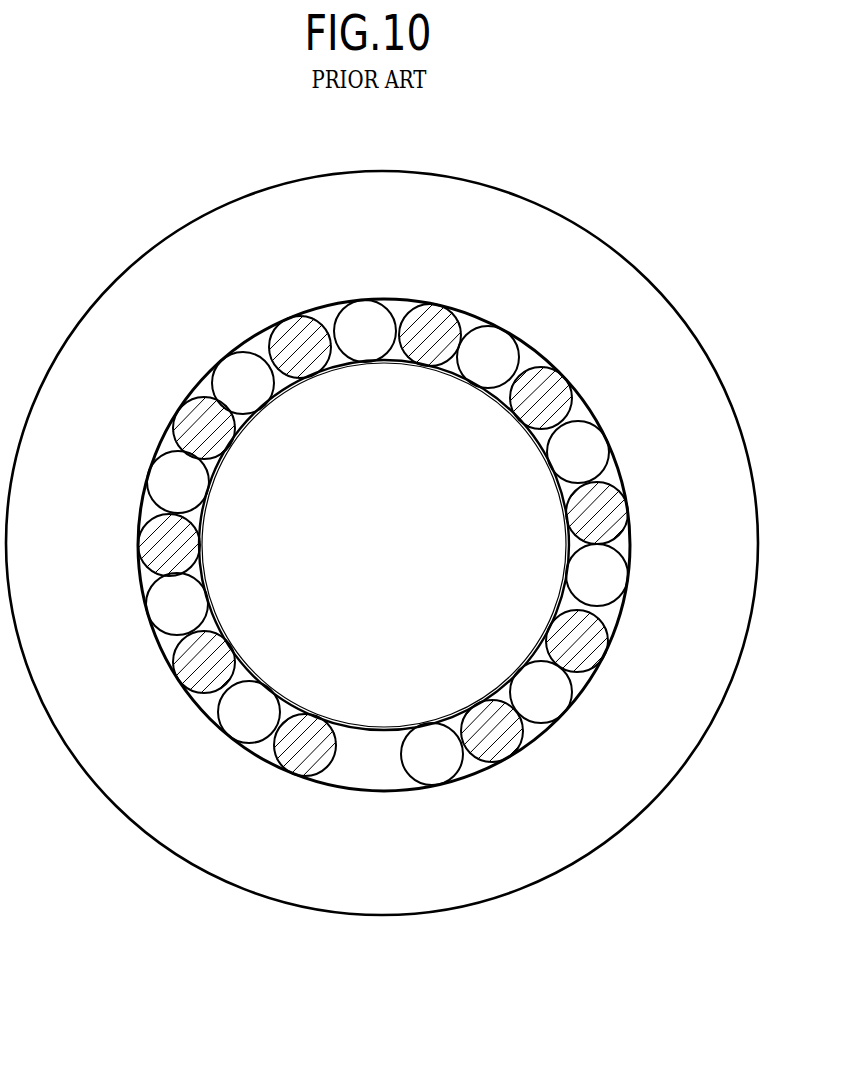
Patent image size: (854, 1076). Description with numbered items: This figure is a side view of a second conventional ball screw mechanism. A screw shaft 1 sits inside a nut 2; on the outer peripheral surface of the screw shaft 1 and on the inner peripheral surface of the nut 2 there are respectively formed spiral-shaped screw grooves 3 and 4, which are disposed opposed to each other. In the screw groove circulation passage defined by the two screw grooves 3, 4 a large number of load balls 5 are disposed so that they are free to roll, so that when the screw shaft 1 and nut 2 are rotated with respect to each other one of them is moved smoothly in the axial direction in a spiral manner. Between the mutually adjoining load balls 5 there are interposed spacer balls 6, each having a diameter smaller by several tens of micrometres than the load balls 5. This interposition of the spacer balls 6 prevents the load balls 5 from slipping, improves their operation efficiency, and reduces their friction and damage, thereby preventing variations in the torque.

The screw shaft 1 is at (367, 707).
The nut 2 is at (587, 807).
The screw groove 3 is at (240, 680).
The screw groove 4 is at (160, 640).
The load ball 5 is at (590, 447).
The spacer ball 6 is at (432, 325).